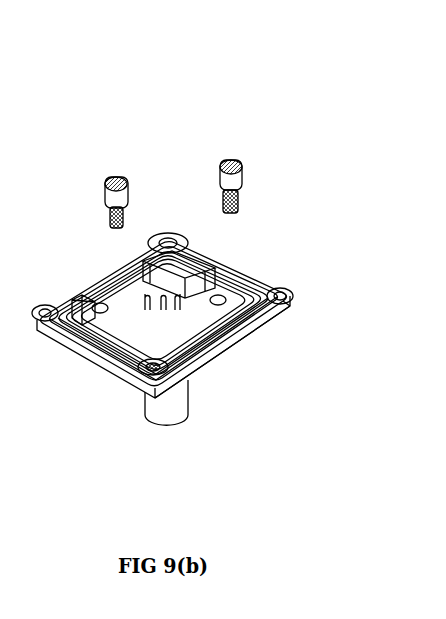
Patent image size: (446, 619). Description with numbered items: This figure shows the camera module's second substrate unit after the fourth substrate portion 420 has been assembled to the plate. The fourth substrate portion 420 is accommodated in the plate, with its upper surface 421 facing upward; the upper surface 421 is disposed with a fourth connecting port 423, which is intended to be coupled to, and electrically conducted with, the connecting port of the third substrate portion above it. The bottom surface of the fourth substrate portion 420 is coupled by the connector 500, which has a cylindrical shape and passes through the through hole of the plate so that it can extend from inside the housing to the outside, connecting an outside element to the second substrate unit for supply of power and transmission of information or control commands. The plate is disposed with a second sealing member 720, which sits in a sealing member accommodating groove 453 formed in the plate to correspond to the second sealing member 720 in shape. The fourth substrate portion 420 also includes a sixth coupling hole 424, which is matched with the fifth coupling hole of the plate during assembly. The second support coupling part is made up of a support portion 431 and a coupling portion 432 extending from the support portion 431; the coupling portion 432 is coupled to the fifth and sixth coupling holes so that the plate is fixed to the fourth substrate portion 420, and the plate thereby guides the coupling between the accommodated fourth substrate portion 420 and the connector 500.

The fourth substrate portion 420 is at (120, 303).
The upper surface 421 is at (98, 308).
The second sealing member 720 is at (53, 302).
The fourth connecting port 423 is at (190, 260).
The sealing member accommodating groove 453 is at (240, 300).
The sixth coupling hole 424 is at (263, 317).
The support portion 431 is at (238, 172).
The coupling portion 432 is at (238, 203).
The connector 500 is at (180, 407).